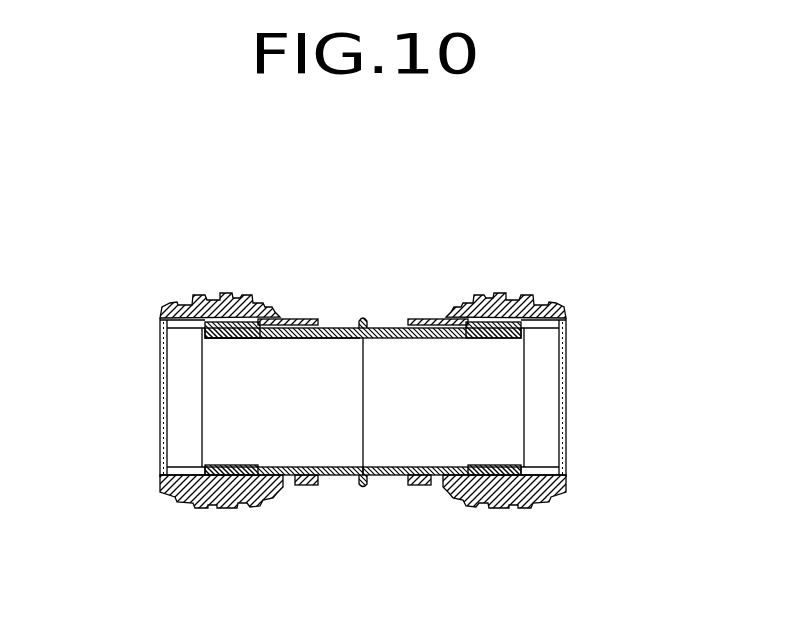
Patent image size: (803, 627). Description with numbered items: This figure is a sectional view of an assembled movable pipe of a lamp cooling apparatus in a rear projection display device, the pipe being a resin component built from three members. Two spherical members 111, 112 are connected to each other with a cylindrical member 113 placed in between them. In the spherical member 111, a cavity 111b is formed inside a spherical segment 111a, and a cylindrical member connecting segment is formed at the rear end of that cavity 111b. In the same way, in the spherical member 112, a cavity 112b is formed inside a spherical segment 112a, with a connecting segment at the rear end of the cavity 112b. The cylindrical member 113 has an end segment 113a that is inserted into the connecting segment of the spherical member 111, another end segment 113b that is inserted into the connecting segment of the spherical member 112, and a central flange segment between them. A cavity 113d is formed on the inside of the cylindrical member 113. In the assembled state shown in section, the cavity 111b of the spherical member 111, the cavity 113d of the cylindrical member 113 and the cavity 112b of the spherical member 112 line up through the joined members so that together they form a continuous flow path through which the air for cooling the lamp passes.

The spherical member 111 is at (222, 292).
The spherical segment 111a is at (225, 510).
The cavity 111b is at (183, 417).
The spherical member 112 is at (505, 295).
The spherical segment 112a is at (502, 510).
The cavity 112b is at (543, 375).
The cylindrical member 113 is at (363, 318).
The end segment 113a is at (205, 468).
The end segment 113b is at (530, 470).
The cavity 113d is at (227, 363).